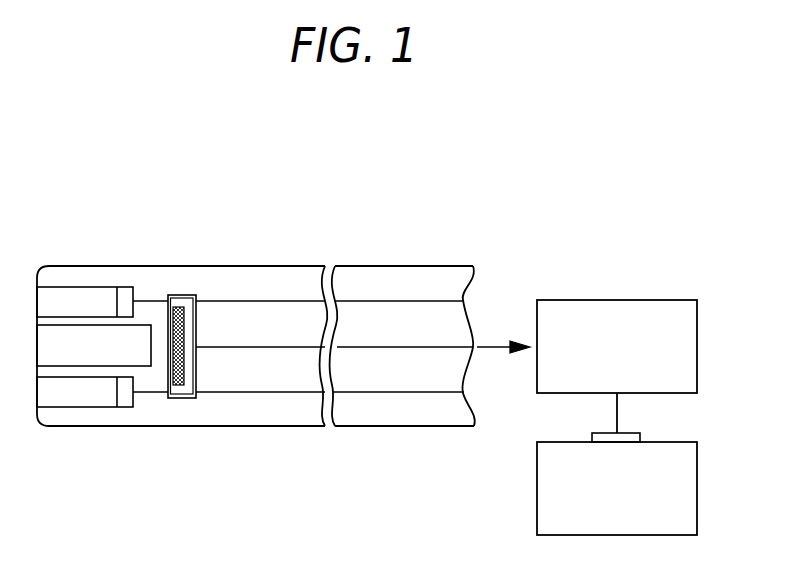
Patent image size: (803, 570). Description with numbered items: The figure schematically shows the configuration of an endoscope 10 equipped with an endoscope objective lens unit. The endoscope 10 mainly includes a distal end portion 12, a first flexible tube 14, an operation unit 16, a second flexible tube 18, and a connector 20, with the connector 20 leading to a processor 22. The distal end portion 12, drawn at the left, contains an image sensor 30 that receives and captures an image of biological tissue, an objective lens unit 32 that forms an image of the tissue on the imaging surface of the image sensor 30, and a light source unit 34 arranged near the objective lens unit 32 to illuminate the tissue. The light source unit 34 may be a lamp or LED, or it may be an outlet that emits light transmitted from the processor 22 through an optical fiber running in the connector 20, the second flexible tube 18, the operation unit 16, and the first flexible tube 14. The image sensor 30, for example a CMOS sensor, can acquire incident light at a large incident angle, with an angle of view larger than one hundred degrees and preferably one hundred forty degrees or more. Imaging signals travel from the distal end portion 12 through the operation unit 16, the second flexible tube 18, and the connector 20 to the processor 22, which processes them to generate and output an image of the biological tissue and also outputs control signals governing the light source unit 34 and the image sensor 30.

The endoscope 10 is at (335, 172).
The distal end portion 12 is at (215, 247).
The first flexible tube 14 is at (354, 222).
The operation unit 16 is at (617, 300).
The second flexible tube 18 is at (618, 412).
The connector 20 is at (640, 437).
The processor 22 is at (698, 488).
The image sensor 30 is at (183, 295).
The objective lens unit 32 is at (108, 348).
The light source unit 34 is at (87, 297).